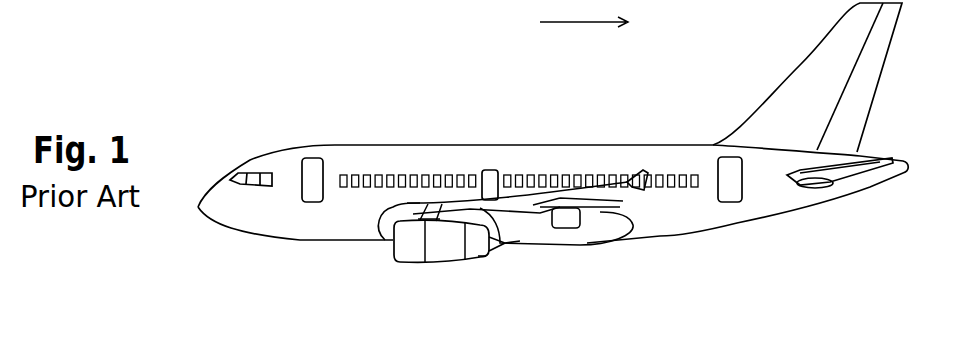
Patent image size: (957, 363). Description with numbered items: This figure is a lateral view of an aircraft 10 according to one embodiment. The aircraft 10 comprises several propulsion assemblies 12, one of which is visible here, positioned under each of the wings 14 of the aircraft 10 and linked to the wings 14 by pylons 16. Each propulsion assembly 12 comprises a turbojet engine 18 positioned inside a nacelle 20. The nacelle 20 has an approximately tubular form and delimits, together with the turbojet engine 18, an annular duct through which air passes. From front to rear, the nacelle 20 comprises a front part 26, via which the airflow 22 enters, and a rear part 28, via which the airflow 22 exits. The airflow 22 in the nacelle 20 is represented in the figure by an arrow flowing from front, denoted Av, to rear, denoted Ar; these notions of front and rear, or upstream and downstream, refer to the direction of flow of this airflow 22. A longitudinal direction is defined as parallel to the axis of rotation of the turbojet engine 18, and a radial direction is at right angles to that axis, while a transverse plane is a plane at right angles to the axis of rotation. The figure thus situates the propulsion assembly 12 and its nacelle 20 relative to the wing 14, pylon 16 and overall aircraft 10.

The aircraft 10 is at (433, 110).
The propulsion assembly 12 is at (362, 275).
The wing 14 is at (552, 196).
The pylon 16 is at (471, 205).
The turbojet engine 18 is at (490, 252).
The nacelle 20 is at (425, 206).
The airflow 22 is at (583, 24).
The front part 26 is at (465, 278).
The rear part 28 is at (475, 270).